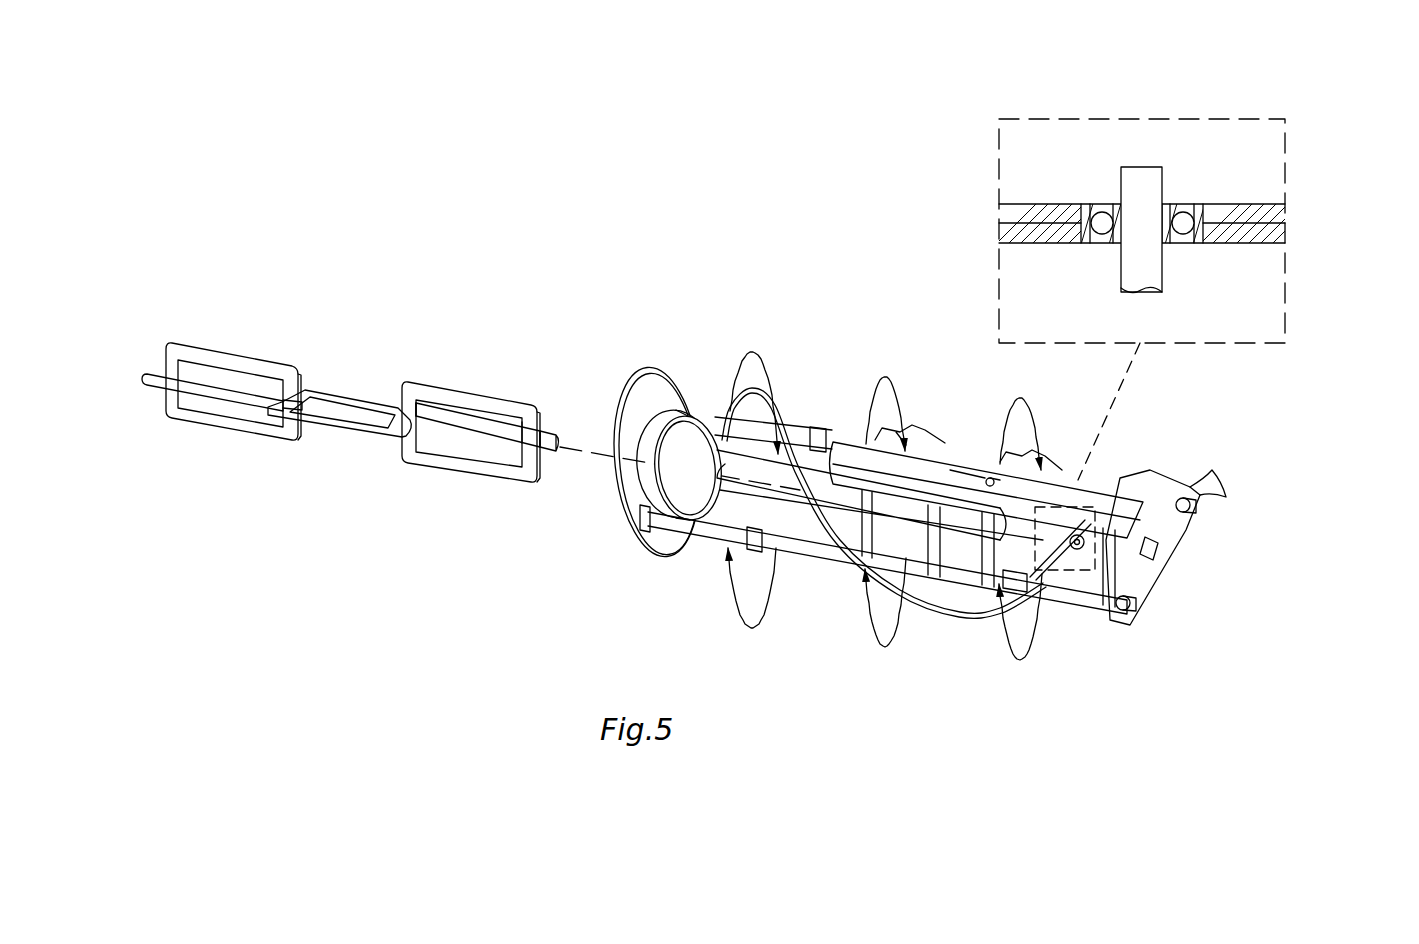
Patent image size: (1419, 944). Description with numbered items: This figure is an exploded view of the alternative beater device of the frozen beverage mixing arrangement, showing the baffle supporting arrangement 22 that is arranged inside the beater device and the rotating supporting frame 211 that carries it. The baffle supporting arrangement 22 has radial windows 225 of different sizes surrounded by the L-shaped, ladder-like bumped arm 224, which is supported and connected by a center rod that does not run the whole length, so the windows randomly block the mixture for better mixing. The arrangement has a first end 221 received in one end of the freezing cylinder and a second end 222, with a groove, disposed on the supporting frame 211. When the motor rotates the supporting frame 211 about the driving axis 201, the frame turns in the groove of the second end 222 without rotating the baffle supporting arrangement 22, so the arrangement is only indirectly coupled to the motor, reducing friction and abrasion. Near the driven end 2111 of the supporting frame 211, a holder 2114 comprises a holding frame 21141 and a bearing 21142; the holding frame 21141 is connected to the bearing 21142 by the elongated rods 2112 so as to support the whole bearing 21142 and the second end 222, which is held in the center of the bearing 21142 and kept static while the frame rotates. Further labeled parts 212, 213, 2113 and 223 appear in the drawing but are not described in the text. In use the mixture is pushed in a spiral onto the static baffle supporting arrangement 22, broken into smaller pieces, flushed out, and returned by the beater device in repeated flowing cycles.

The driving axis 201 is at (645, 509).
The baffle supporting arrangement 22 is at (461, 467).
The first end 221 is at (166, 377).
The second end 222 is at (855, 251).
The first frame 223 is at (181, 403).
The bumped arm 224 is at (305, 445).
The radial windows 225 is at (474, 382).
The supporting frame 211 is at (1125, 588).
The driven end 2111 is at (1129, 622).
The elongated rods 2112 is at (826, 516).
The bar 2113 is at (987, 445).
The holder 2114 is at (1204, 197).
The holding frame 21141 is at (1204, 248).
The bearing 21142 is at (1199, 150).
The spring 212 is at (853, 469).
The tube 213 is at (880, 566).